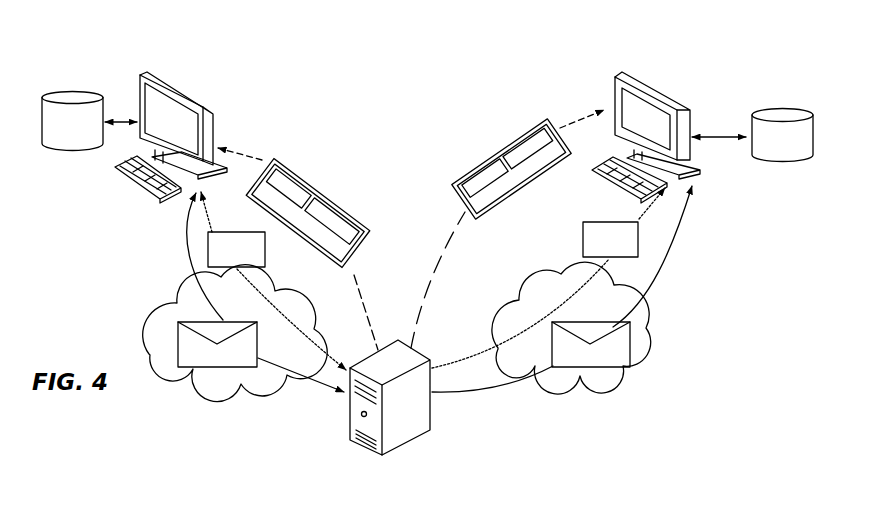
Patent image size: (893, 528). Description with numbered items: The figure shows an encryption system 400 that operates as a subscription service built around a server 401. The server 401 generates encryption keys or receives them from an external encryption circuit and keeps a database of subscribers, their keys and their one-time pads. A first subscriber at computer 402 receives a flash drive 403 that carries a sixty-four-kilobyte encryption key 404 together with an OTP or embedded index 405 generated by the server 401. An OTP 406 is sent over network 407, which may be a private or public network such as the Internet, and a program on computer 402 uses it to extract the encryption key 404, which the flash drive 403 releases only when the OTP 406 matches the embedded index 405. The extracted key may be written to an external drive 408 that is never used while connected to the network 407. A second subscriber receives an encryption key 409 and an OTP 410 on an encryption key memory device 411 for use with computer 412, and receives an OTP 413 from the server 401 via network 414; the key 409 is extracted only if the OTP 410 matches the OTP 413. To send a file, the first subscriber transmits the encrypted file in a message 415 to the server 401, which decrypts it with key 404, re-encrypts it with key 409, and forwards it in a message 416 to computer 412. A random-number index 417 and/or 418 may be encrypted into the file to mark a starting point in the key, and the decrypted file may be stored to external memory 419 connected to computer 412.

The encryption system 400 is at (76, 41).
The server 401 is at (390, 397).
The computer 402 is at (171, 137).
The flash drive 403 is at (329, 207).
The encryption key 404 is at (301, 173).
The OTP or embedded index 405 is at (345, 204).
The OTP 406 is at (266, 250).
The network 407 is at (207, 400).
The external drive 408 is at (72, 121).
The encryption key 409 is at (491, 156).
The OTP 410 is at (462, 171).
The encryption key memory device 411 is at (458, 198).
The computer 412 is at (646, 137).
The OTP 413 is at (583, 238).
The network 414 is at (607, 378).
The message 415 is at (217, 344).
The message 416 is at (591, 344).
The random-number index 417 is at (217, 330).
The random-number index 418 is at (627, 340).
The external memory 419 is at (782, 135).